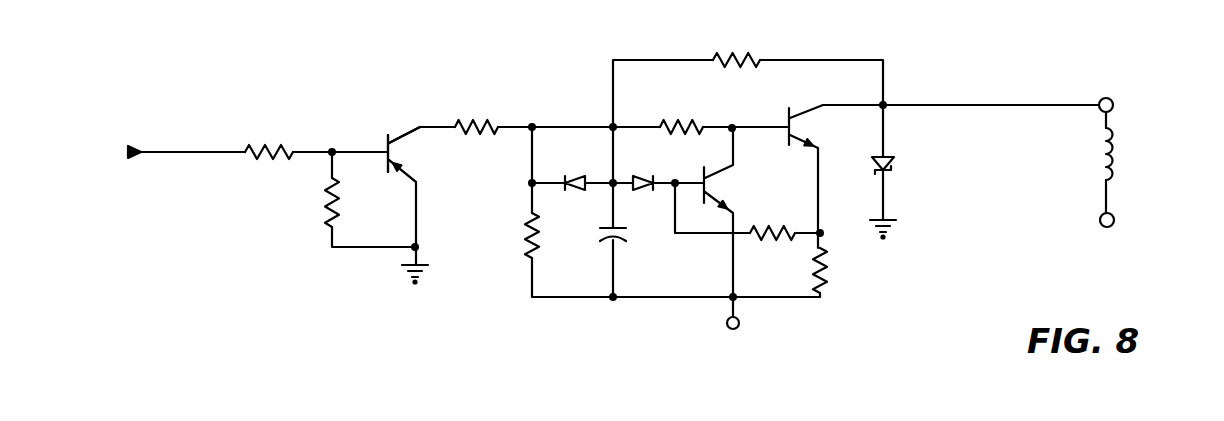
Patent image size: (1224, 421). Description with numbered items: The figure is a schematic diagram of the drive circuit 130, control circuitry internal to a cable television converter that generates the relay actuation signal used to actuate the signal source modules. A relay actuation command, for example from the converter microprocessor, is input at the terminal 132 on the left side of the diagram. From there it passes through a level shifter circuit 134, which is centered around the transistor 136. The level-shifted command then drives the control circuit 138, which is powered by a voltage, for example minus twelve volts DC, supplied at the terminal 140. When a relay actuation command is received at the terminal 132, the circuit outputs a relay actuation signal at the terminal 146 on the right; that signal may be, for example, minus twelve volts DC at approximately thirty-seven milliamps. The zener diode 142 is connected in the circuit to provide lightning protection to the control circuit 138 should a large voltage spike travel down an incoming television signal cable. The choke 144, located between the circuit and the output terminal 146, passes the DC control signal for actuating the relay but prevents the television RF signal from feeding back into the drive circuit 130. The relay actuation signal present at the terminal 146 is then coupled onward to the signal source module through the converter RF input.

The drive circuit 130 is at (1124, 82).
The terminal 132 is at (141, 157).
The level shifter circuit 134 is at (298, 206).
The transistor 136 is at (398, 160).
The control circuit 138 is at (872, 51).
The terminal 140 is at (727, 323).
The zener diode 142 is at (888, 172).
The choke 144 is at (1115, 148).
The terminal 146 is at (1114, 220).